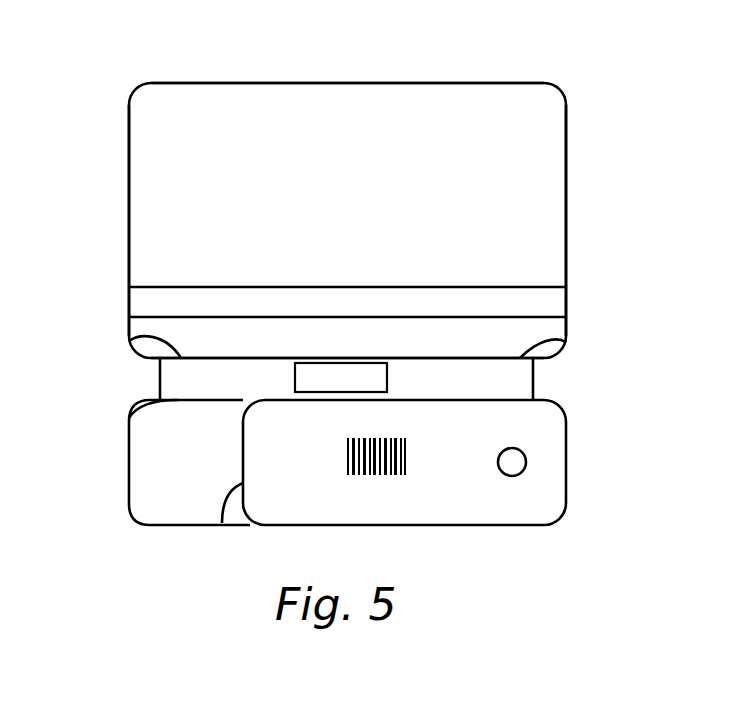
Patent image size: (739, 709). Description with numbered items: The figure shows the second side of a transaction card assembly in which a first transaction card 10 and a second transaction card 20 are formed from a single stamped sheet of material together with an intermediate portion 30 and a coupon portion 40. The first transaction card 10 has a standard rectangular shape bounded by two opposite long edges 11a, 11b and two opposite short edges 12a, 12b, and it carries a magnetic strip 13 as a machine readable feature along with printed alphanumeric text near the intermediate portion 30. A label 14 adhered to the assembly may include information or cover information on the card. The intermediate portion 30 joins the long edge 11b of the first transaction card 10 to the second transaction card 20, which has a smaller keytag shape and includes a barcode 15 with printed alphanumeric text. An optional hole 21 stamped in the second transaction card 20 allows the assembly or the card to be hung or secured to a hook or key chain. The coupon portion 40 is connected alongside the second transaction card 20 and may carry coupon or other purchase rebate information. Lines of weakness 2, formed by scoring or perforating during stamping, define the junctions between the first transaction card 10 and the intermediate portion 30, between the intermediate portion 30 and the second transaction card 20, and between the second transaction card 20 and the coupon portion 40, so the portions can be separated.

The first transaction card 10 is at (568, 216).
The long edge 11a is at (515, 82).
The long edge 11b is at (130, 341).
The short edge 12a is at (129, 134).
The short edge 12b is at (568, 128).
The magnetic strip 13 is at (135, 301).
The label 14 is at (389, 378).
The barcode 15 is at (407, 456).
The line of weakness 2 is at (566, 342).
The second transaction card 20 is at (568, 434).
The hole 21 is at (527, 462).
The intermediate portion 30 is at (535, 379).
The coupon portion 40 is at (128, 469).